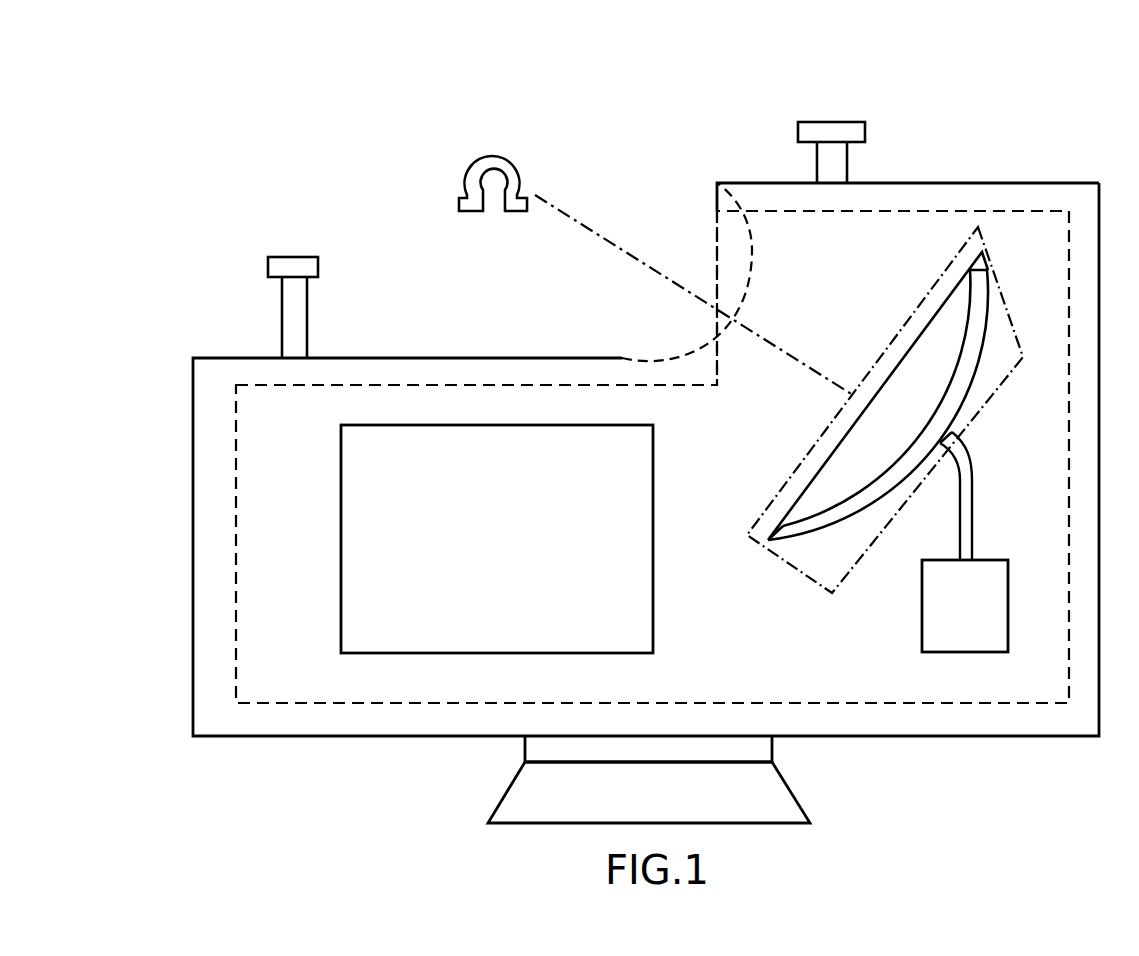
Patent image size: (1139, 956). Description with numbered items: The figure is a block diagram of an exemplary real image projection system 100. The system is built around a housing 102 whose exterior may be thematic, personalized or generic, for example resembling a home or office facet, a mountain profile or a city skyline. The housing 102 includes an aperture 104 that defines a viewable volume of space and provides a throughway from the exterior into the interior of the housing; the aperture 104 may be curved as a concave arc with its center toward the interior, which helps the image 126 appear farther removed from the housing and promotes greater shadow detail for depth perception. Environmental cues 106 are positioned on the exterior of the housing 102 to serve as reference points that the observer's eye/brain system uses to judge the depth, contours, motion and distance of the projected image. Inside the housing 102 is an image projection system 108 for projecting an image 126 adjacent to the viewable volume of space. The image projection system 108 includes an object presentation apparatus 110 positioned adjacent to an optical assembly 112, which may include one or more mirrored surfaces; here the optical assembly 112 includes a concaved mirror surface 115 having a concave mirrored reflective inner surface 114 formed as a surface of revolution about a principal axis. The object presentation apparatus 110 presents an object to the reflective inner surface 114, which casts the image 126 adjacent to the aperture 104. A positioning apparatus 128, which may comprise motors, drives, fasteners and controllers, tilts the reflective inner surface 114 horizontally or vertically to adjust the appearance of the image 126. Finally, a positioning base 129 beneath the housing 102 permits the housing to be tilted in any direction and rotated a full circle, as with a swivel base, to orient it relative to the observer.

The real image projection system 100 is at (322, 144).
The housing 102 is at (428, 358).
The aperture 104 is at (703, 244).
The environmental cues 106 is at (290, 257).
The image projection system 108 is at (233, 405).
The object presentation apparatus 110 is at (655, 450).
The optical assembly 112 is at (840, 415).
The concave mirrored reflective inner surface 114 is at (902, 450).
The concaved mirror surface 115 is at (923, 332).
The image 126 is at (518, 165).
The positioning apparatus 128 is at (1010, 572).
The positioning base 129 is at (787, 780).